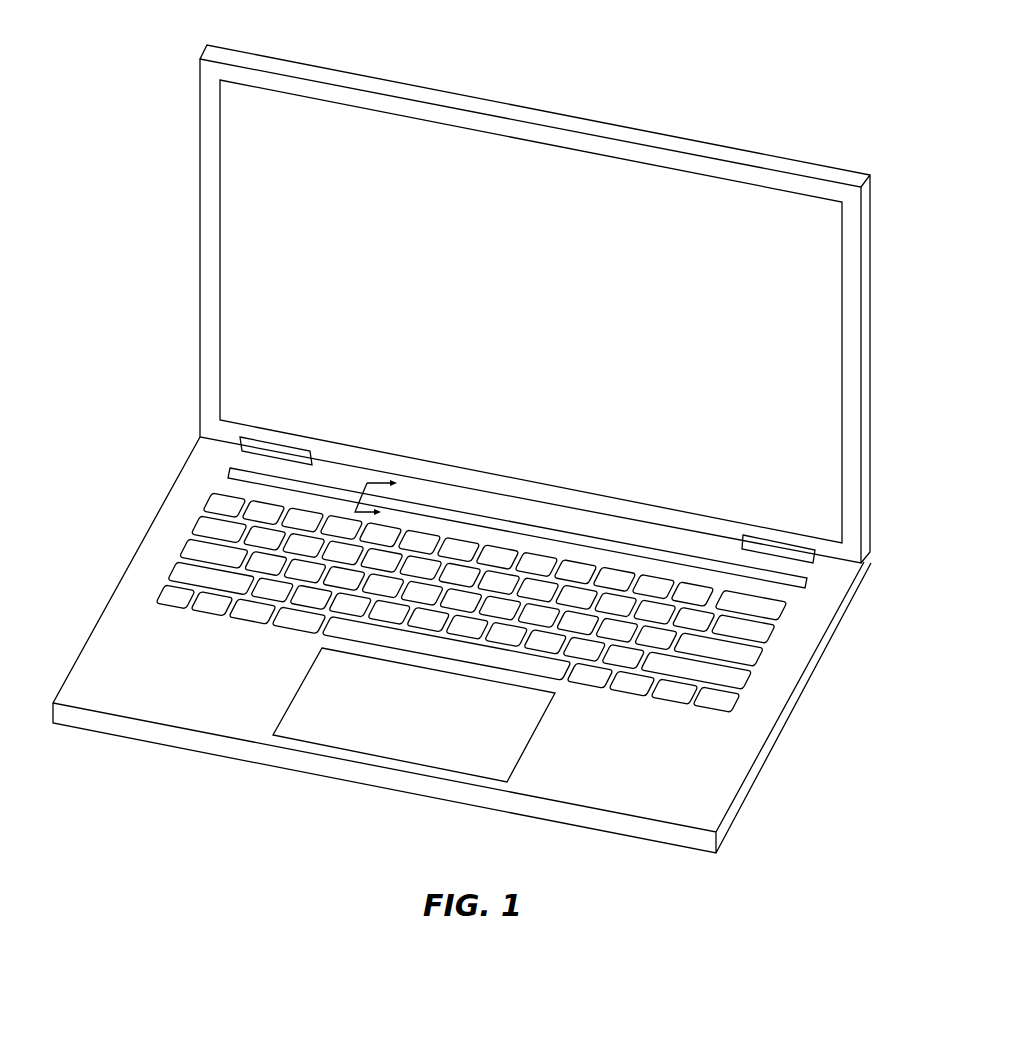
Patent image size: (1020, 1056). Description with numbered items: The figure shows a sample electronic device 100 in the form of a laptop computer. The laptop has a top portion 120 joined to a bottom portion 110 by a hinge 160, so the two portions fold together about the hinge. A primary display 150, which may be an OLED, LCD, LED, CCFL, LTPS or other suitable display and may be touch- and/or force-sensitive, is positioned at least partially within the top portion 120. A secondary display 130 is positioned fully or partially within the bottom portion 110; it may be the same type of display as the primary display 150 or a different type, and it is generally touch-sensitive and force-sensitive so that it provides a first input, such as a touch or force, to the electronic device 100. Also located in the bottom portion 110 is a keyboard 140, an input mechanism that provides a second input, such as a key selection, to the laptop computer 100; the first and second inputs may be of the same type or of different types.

The electronic device 100 is at (705, 55).
The bottom portion 110 is at (120, 574).
The top portion 120 is at (200, 157).
The secondary display 130 is at (230, 470).
The keyboard 140 is at (197, 521).
The primary display 150 is at (220, 238).
The hinge 160 is at (240, 440).